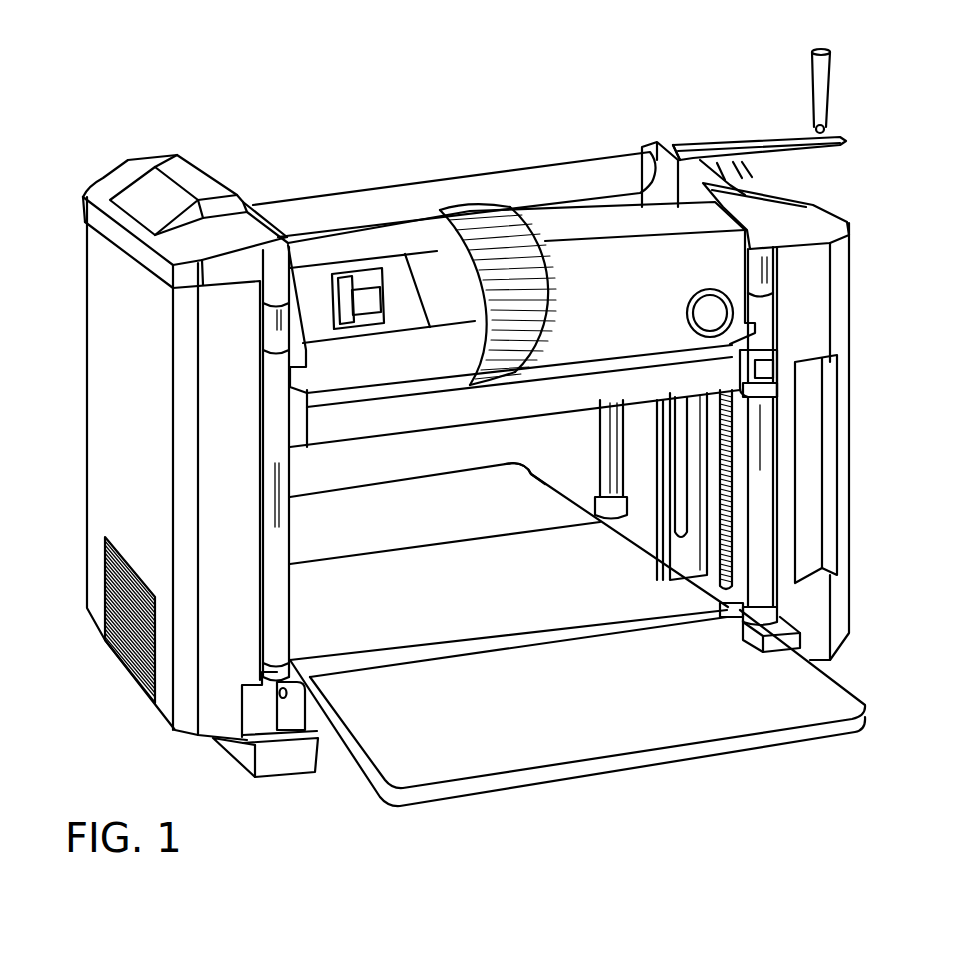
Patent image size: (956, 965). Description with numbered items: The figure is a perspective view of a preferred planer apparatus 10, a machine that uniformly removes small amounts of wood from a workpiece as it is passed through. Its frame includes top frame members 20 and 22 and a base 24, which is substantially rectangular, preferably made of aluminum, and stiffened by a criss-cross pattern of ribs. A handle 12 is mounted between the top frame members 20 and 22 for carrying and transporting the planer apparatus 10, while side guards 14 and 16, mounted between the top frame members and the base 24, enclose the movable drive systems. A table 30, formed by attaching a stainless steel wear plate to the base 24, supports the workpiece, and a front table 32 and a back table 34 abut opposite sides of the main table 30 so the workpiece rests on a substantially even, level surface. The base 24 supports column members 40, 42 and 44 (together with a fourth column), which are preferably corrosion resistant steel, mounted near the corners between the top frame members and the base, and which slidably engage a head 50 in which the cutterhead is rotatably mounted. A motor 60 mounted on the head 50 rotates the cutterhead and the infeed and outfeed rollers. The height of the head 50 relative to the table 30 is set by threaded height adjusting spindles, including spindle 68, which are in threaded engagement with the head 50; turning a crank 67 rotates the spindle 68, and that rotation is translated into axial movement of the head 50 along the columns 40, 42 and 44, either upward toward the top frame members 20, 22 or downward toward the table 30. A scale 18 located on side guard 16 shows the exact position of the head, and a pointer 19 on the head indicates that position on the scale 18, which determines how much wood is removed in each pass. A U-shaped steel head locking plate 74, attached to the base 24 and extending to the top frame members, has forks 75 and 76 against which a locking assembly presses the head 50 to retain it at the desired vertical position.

The planer apparatus 10 is at (460, 58).
The handle 12 is at (607, 160).
The side guard 14 is at (114, 347).
The side guard 16 is at (840, 268).
The scale 18 is at (812, 425).
The pointer 19 is at (833, 345).
The top frame member 20 is at (121, 172).
The top frame member 22 is at (820, 218).
The base 24 is at (288, 776).
The table 30 is at (481, 604).
The front table 32 is at (536, 760).
The back table 34 is at (522, 473).
The column member 40 is at (290, 600).
The column member 42 is at (758, 597).
The column member 44 is at (600, 448).
The head 50 is at (352, 437).
The motor 60 is at (620, 287).
The crank 67 is at (832, 80).
The height adjusting spindle 68 is at (722, 616).
The head locking plate 74 is at (675, 548).
The fork 75 is at (662, 498).
The fork 76 is at (695, 522).